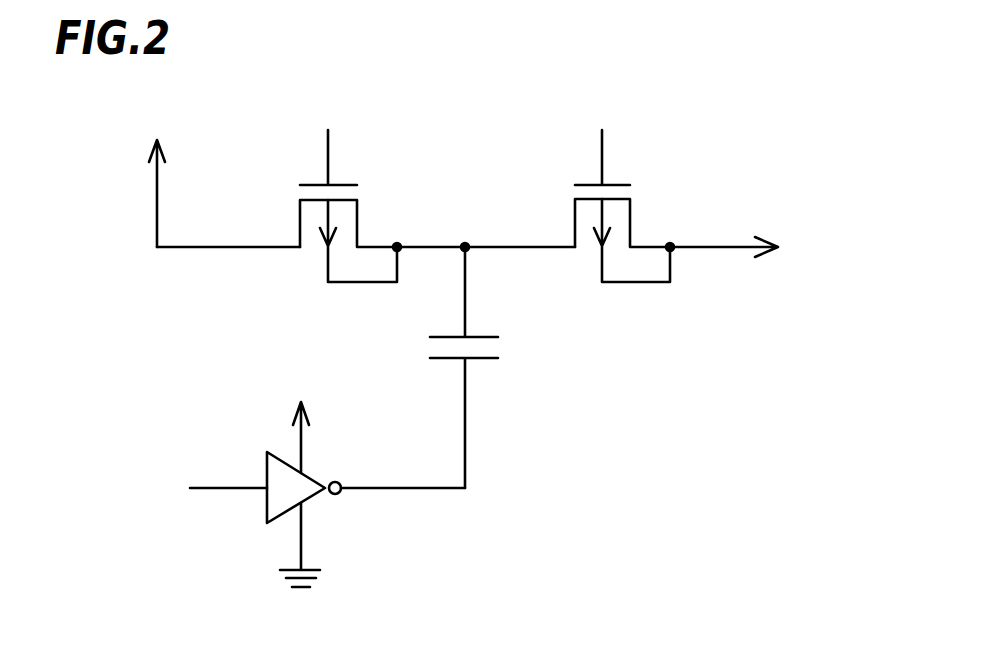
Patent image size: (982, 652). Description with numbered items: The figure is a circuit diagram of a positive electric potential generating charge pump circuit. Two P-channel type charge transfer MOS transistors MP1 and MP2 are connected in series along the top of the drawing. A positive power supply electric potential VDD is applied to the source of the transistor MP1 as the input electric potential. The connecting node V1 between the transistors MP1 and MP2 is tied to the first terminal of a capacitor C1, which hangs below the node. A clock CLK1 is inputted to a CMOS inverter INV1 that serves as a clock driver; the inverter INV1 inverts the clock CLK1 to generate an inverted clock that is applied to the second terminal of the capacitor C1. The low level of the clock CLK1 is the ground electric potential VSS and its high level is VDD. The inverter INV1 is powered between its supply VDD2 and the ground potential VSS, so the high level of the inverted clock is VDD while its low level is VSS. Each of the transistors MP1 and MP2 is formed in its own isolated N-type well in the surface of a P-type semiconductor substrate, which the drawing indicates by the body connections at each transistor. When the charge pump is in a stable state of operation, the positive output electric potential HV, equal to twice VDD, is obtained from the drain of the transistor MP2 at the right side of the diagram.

The P-channel type charge transfer MOS transistor MP1 is at (308, 252).
The P-channel type charge transfer MOS transistor MP2 is at (648, 213).
The capacitor C1 is at (507, 351).
The CMOS inverter INV1 is at (257, 525).
The connecting node V1 is at (465, 243).
The positive power supply electric potential VDD is at (212, 175).
The power supply electric potential of the CMOS inverter VDD2 is at (335, 433).
The positive output electric potential HV is at (752, 248).
The clock CLK1 is at (187, 488).
The ground electric potential VSS is at (330, 553).